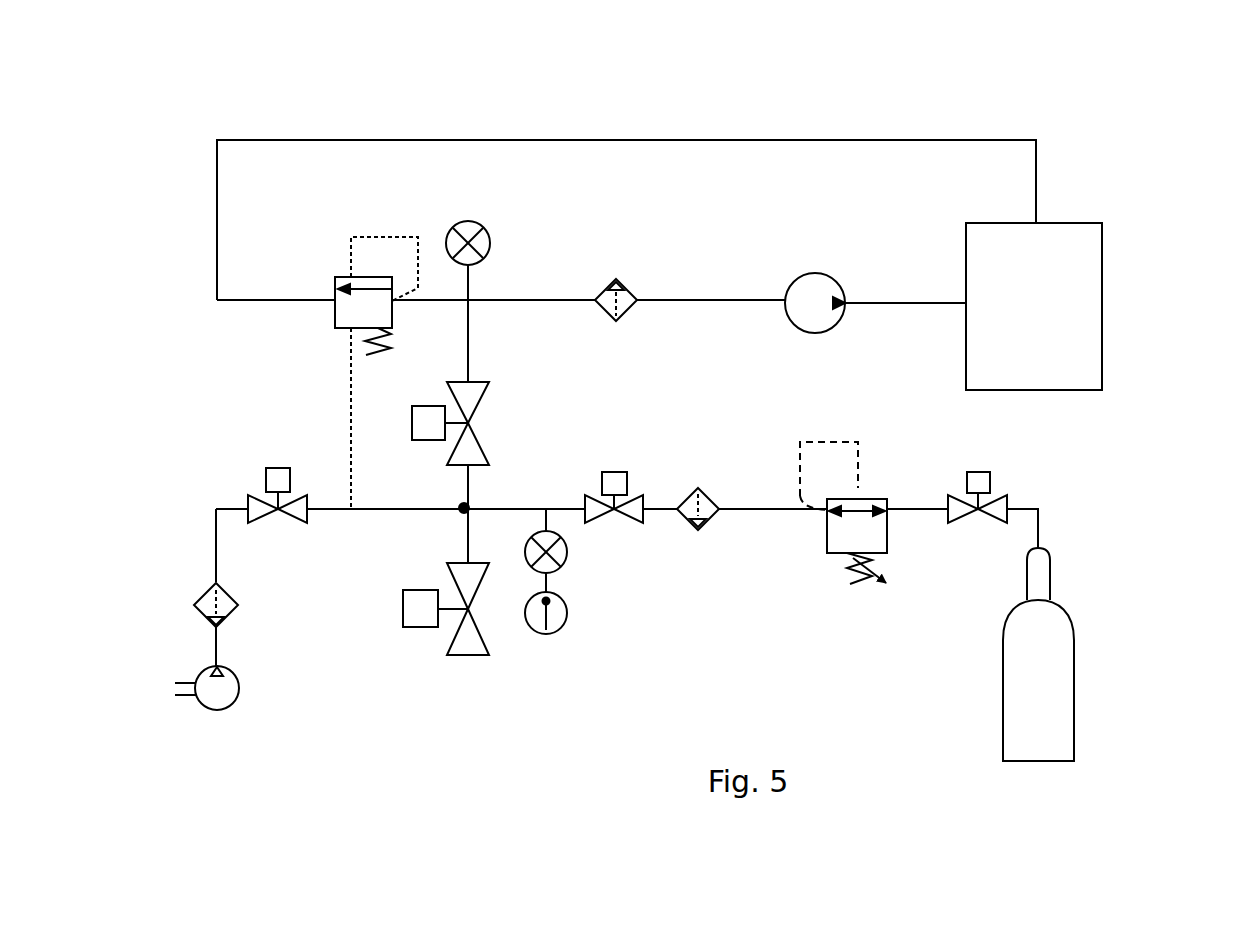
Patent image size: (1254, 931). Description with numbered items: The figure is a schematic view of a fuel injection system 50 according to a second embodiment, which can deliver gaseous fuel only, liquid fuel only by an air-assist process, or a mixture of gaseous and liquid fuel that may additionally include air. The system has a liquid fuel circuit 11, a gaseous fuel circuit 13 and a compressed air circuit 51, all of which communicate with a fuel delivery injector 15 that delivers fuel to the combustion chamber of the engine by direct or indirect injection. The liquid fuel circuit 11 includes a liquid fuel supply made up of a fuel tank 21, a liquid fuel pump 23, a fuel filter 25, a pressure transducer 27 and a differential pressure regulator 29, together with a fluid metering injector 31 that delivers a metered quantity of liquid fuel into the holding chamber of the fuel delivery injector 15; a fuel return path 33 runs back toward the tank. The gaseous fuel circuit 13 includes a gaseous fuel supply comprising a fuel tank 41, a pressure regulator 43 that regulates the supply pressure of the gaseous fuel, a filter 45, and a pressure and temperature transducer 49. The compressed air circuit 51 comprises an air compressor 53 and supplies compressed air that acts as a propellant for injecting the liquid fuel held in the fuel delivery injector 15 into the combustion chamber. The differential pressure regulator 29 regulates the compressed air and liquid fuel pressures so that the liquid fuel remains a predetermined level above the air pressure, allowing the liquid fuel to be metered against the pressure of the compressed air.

The fuel injection system 50 is at (197, 170).
The fuel return path 33 is at (858, 140).
The liquid fuel circuit 11 is at (1130, 277).
The fuel tank 21 is at (1078, 354).
The liquid fuel pump 23 is at (813, 312).
The fuel filter 25 is at (618, 305).
The pressure transducer 27 is at (480, 243).
The differential pressure regulator 29 is at (350, 310).
The fluid metering injector 31 is at (470, 445).
The fuel delivery injector 15 is at (481, 663).
The pressure and temperature transducer 49 is at (562, 572).
The filter 45 is at (697, 515).
The pressure regulator 43 is at (843, 546).
The gaseous fuel circuit 13 is at (1084, 570).
The fuel tank 41 is at (1052, 712).
The compressed air circuit 51 is at (190, 580).
The air compressor 53 is at (207, 678).